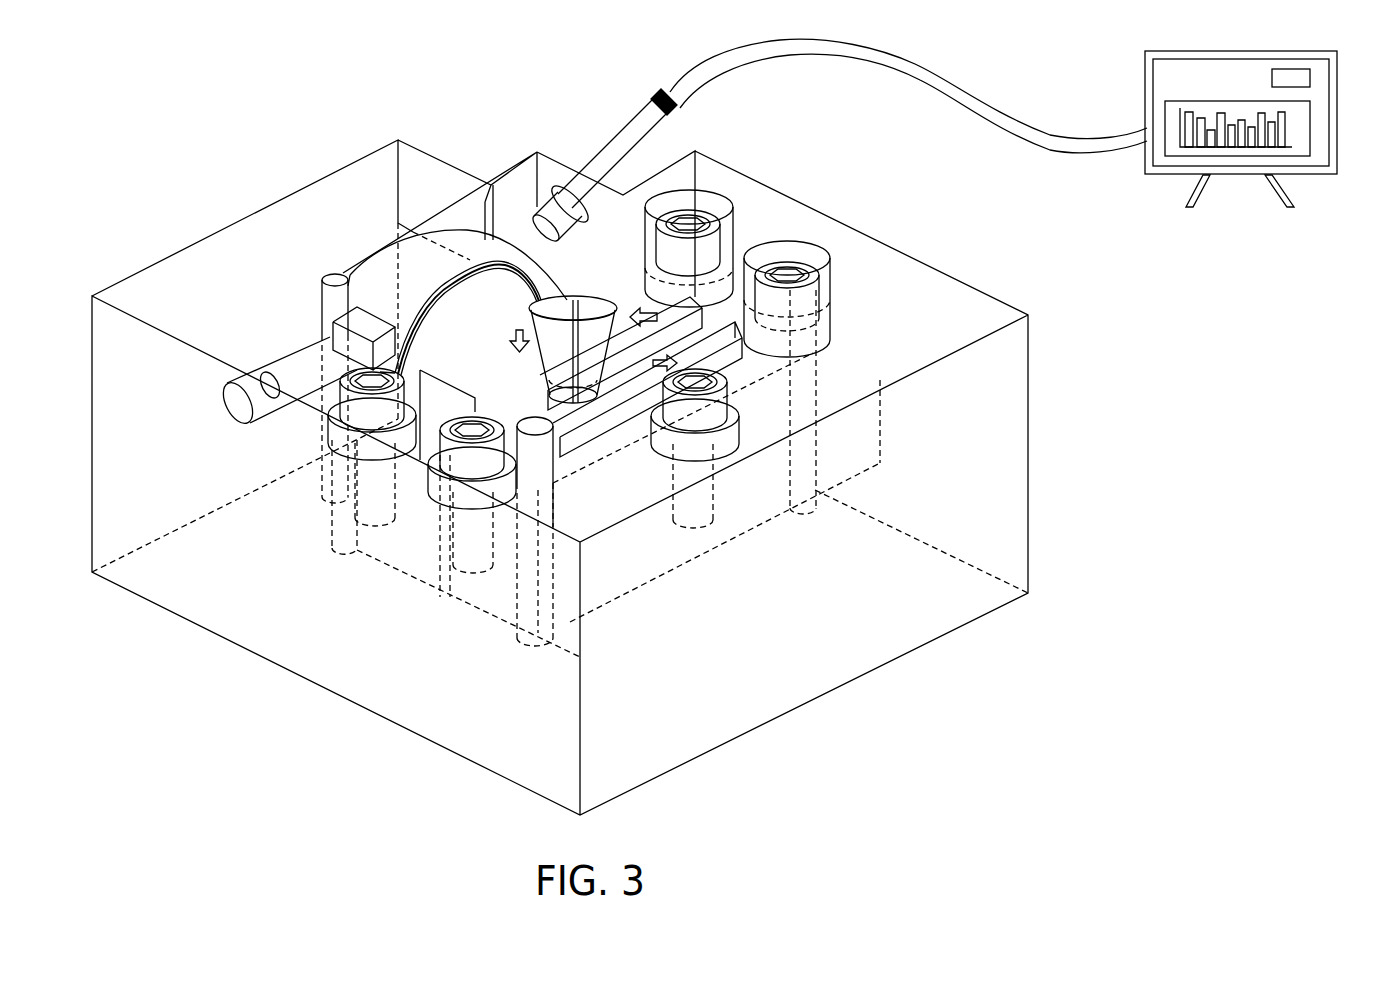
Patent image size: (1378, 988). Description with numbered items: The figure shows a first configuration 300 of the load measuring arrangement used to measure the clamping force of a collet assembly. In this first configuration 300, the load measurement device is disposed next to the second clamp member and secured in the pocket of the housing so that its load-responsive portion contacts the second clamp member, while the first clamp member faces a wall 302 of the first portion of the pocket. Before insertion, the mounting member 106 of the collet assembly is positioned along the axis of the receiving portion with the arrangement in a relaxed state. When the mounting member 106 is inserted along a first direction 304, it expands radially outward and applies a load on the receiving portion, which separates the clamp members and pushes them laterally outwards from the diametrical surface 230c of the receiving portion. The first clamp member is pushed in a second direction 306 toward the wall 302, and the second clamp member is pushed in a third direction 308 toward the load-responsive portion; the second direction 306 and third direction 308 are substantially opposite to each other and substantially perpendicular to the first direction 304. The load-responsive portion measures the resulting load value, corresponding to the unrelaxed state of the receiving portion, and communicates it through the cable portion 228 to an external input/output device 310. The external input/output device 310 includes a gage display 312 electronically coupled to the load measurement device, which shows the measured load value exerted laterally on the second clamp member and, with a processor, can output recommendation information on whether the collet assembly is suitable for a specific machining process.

The first configuration 300 is at (172, 148).
The wall 302 is at (760, 433).
The first direction 304 is at (520, 368).
The mounting member 106 is at (592, 310).
The third direction 308 is at (728, 372).
The second direction 306 is at (748, 352).
The diametrical surface 230c is at (322, 272).
The cable portion 228 is at (946, 97).
The external input/output (I/O) device 310 is at (1143, 90).
The gage display 312 is at (1307, 78).